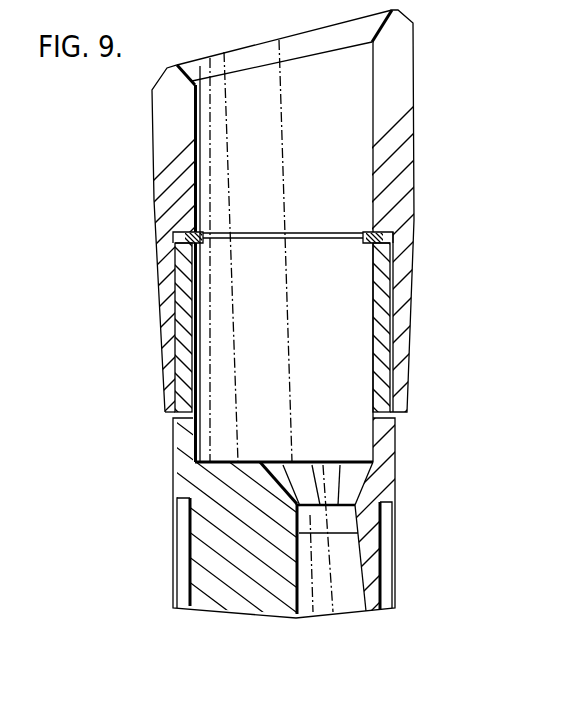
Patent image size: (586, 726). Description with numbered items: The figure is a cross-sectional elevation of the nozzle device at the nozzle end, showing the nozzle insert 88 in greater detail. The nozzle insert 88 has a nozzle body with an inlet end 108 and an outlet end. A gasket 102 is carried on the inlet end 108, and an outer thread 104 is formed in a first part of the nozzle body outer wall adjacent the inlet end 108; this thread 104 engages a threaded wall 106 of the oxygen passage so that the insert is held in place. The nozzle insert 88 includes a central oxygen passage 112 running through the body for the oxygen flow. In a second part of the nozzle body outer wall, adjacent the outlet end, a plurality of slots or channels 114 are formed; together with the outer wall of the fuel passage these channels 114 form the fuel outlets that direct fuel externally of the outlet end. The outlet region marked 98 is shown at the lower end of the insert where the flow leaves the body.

The nozzle insert 88 is at (411, 454).
The throat / outlet passage 98 is at (333, 613).
The gasket 102 is at (198, 233).
The outer thread 104 is at (390, 331).
The threaded wall 106 is at (388, 271).
The inlet end 108 is at (371, 297).
The central oxygen passage 112 is at (198, 318).
The slots or channels 114 is at (388, 549).